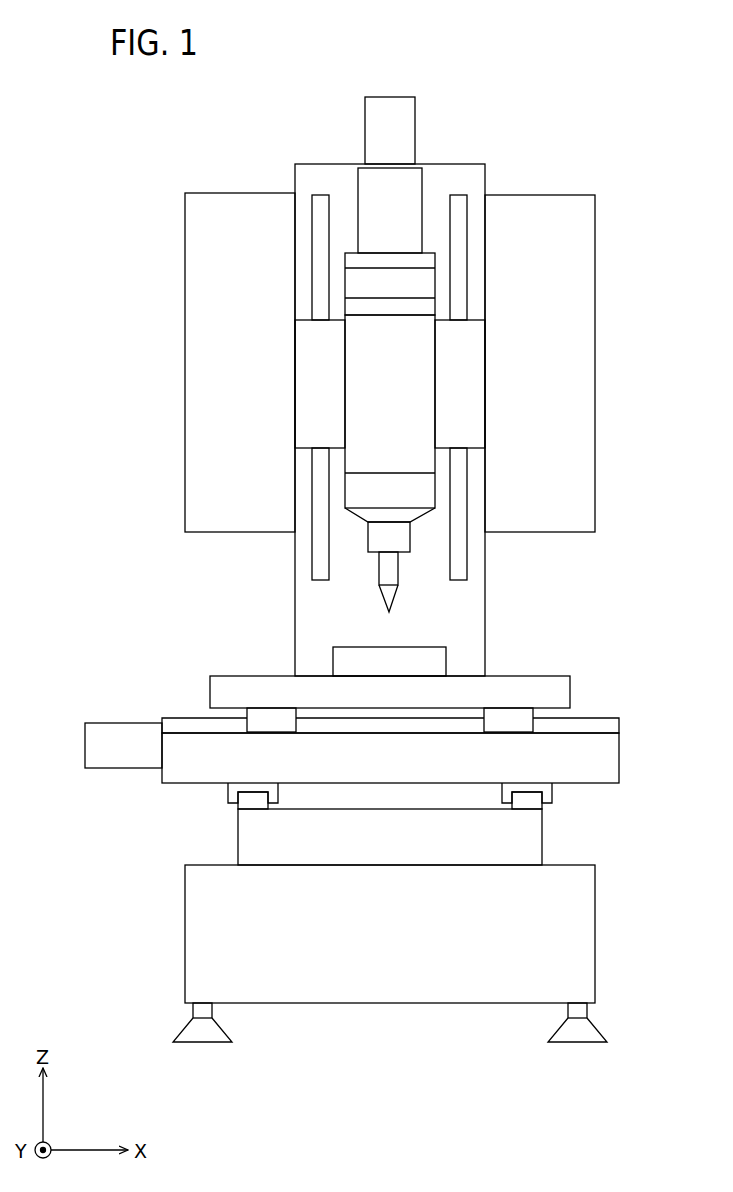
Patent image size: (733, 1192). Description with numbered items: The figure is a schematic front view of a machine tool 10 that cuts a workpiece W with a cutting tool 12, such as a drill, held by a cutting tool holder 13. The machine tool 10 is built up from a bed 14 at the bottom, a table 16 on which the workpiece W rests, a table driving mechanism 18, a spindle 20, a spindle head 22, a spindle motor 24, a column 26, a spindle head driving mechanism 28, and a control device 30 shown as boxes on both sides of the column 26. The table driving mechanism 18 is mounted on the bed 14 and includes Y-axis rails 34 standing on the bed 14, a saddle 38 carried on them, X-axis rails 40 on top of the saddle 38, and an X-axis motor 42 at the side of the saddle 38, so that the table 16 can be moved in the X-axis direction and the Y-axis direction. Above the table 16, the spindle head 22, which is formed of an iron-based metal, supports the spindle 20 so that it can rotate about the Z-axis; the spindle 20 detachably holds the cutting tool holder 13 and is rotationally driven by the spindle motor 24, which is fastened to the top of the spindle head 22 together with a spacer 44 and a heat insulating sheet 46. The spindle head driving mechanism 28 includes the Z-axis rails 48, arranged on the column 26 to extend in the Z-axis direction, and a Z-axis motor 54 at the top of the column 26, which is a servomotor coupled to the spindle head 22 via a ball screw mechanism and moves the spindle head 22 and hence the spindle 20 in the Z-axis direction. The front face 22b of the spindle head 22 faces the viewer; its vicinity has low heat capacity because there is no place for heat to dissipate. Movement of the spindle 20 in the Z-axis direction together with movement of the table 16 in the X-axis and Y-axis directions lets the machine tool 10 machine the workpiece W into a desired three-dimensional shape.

The machine tool 10 is at (565, 138).
The cutting tool 12 is at (392, 565).
The cutting tool holder 13 is at (375, 535).
The bed 14 is at (380, 980).
The table 16 is at (553, 694).
The table driving mechanism 18 is at (137, 797).
The spindle 20 is at (368, 488).
The spindle head 22 is at (370, 378).
The front face 22b is at (370, 403).
The spindle motor 24 is at (375, 240).
The column 26 is at (435, 178).
The spindle head driving mechanism 28 is at (287, 348).
The control device 30 is at (568, 284).
The Y-axis rails 34 is at (250, 800).
The saddle 38 is at (607, 765).
The X-axis rails 40 is at (607, 727).
The X-axis motor 42 is at (106, 745).
The spacer 44 is at (358, 283).
The heat insulating sheet 46 is at (356, 305).
The Z-axis rails 48 is at (318, 210).
The Z-axis motor 54 is at (385, 110).
The workpiece W is at (378, 665).